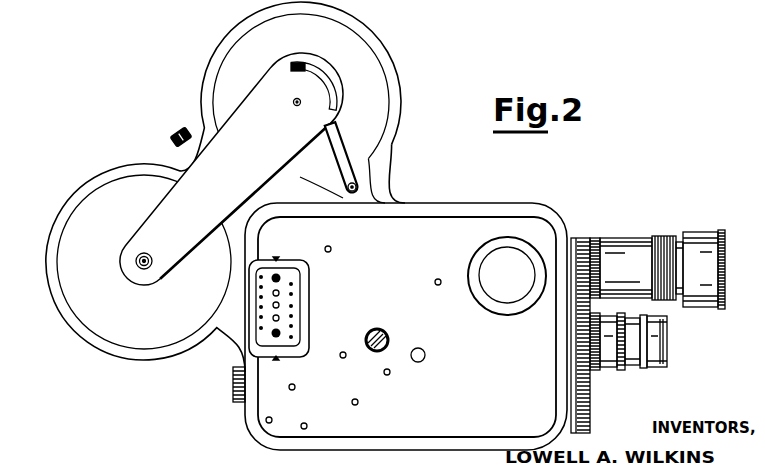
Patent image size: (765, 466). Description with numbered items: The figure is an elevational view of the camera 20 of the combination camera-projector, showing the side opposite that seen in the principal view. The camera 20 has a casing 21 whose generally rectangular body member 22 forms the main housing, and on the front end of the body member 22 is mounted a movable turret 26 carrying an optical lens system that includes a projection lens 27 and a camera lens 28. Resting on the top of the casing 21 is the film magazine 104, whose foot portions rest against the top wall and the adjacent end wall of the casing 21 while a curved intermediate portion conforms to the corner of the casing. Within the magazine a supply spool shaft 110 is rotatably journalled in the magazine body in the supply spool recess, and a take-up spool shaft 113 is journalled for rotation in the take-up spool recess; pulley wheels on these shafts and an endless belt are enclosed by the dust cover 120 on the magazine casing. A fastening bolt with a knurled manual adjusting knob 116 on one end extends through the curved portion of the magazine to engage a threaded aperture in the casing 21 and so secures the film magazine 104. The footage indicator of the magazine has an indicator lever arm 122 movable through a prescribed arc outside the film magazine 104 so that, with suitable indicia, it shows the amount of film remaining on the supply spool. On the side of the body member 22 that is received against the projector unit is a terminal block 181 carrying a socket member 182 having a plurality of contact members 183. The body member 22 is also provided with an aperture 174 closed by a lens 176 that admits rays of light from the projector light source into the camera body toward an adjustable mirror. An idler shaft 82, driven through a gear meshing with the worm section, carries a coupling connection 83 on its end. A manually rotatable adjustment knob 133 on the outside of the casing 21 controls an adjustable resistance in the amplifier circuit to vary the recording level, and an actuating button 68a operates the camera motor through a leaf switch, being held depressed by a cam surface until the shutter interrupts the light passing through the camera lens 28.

The camera 20 is at (406, 281).
The casing 21 is at (531, 202).
The body member 22 is at (422, 208).
The movable turret 26 is at (590, 421).
The projection lens 27 is at (666, 236).
The camera lens 28 is at (600, 357).
The actuating button 68a is at (423, 362).
The idler shaft 82 is at (396, 359).
The coupling connection 83 is at (375, 353).
The film magazine 104 is at (188, 109).
The supply spool shaft 110 is at (293, 106).
The take-up spool shaft 113 is at (144, 270).
The knurled manual adjusting knob 116 is at (170, 143).
The dust cover 120 is at (157, 230).
The indicator lever arm 122 is at (337, 152).
The manually rotatable adjustment knob 133 is at (232, 383).
The aperture 174 is at (507, 300).
The lens 176 is at (485, 294).
The terminal block 181 is at (316, 306).
The socket member 182 is at (302, 300).
The contact members 183 is at (299, 320).